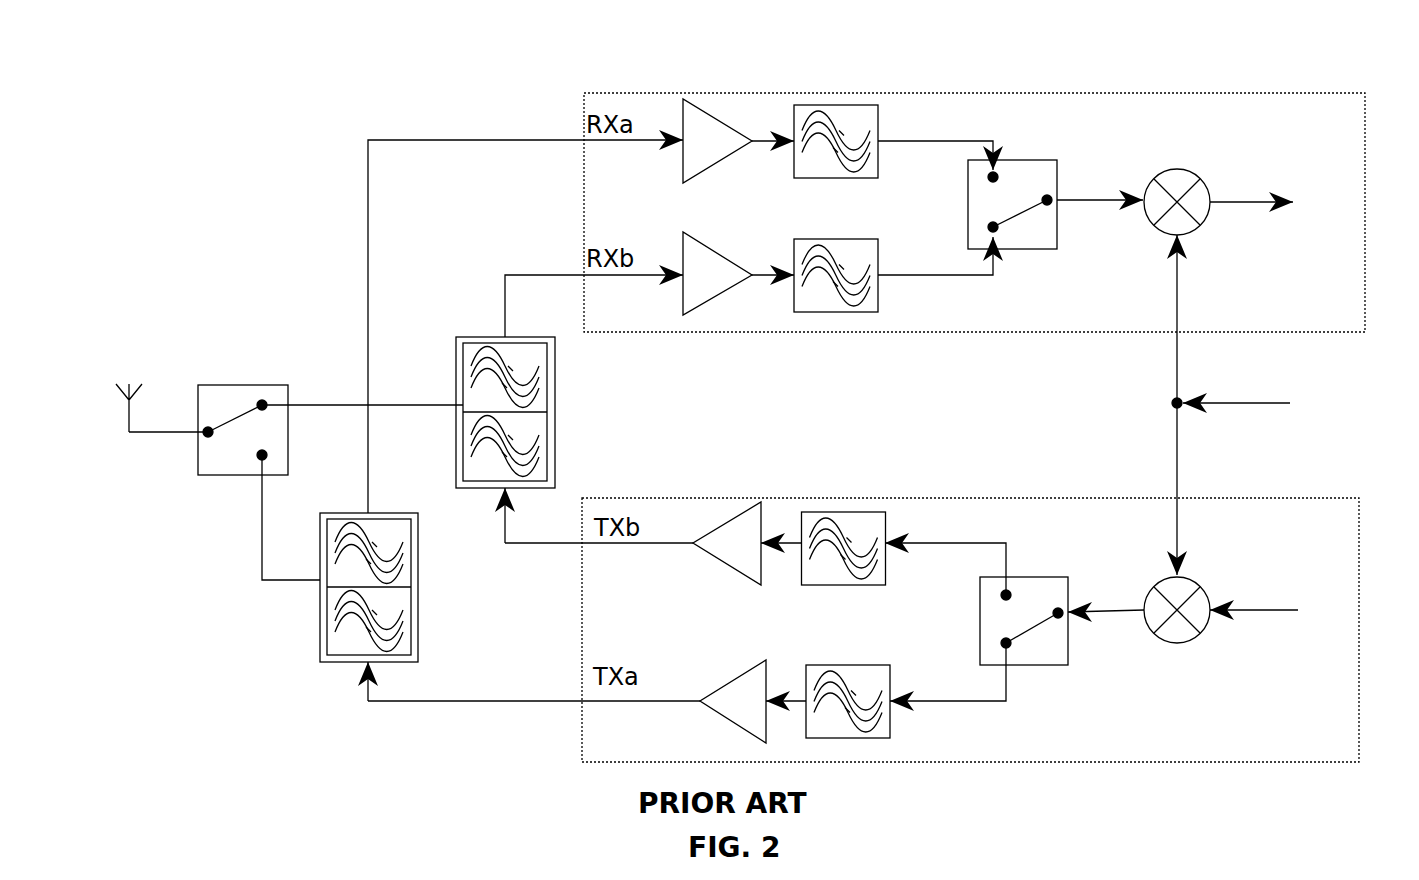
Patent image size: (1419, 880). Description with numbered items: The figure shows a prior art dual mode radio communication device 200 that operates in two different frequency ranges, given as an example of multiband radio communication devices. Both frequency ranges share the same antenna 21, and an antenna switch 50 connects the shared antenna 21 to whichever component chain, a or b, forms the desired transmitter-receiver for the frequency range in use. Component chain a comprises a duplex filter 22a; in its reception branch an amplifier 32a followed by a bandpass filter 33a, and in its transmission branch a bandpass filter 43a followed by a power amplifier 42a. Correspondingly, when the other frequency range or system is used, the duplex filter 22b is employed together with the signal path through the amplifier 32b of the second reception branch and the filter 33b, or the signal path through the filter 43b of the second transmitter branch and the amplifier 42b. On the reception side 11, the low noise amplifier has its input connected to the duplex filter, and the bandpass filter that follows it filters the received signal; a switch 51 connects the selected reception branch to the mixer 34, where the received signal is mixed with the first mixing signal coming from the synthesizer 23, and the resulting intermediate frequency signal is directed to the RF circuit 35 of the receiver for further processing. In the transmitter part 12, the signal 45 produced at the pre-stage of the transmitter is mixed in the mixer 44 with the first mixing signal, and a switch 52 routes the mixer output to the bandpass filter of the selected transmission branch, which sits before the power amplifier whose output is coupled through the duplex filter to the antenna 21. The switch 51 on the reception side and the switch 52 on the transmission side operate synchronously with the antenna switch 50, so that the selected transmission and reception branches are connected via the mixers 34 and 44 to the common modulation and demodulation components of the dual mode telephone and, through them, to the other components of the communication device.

The dual mode radio communication device 200 is at (257, 73).
The reception side 11 is at (1365, 95).
The transmitter part 12 is at (1359, 498).
The antenna 21 is at (151, 410).
The duplex filter 22a is at (320, 618).
The duplex filter 22b is at (558, 395).
The synthesizer 23 is at (1244, 405).
The amplifier 32a is at (705, 108).
The amplifier 32b is at (705, 243).
The bandpass filter 33a is at (815, 107).
The filter 33b is at (815, 240).
The mixer 34 is at (1177, 171).
The RF circuit 35 is at (1269, 205).
The power amplifier 42a is at (735, 678).
The amplifier 42b is at (717, 522).
The bandpass filter 43a is at (838, 665).
The filter 43b is at (830, 512).
The mixer 44 is at (1172, 643).
The signal 45 is at (1272, 615).
The antenna switch 50 is at (232, 385).
The switch 51 is at (1016, 160).
The switch 52 is at (1025, 577).